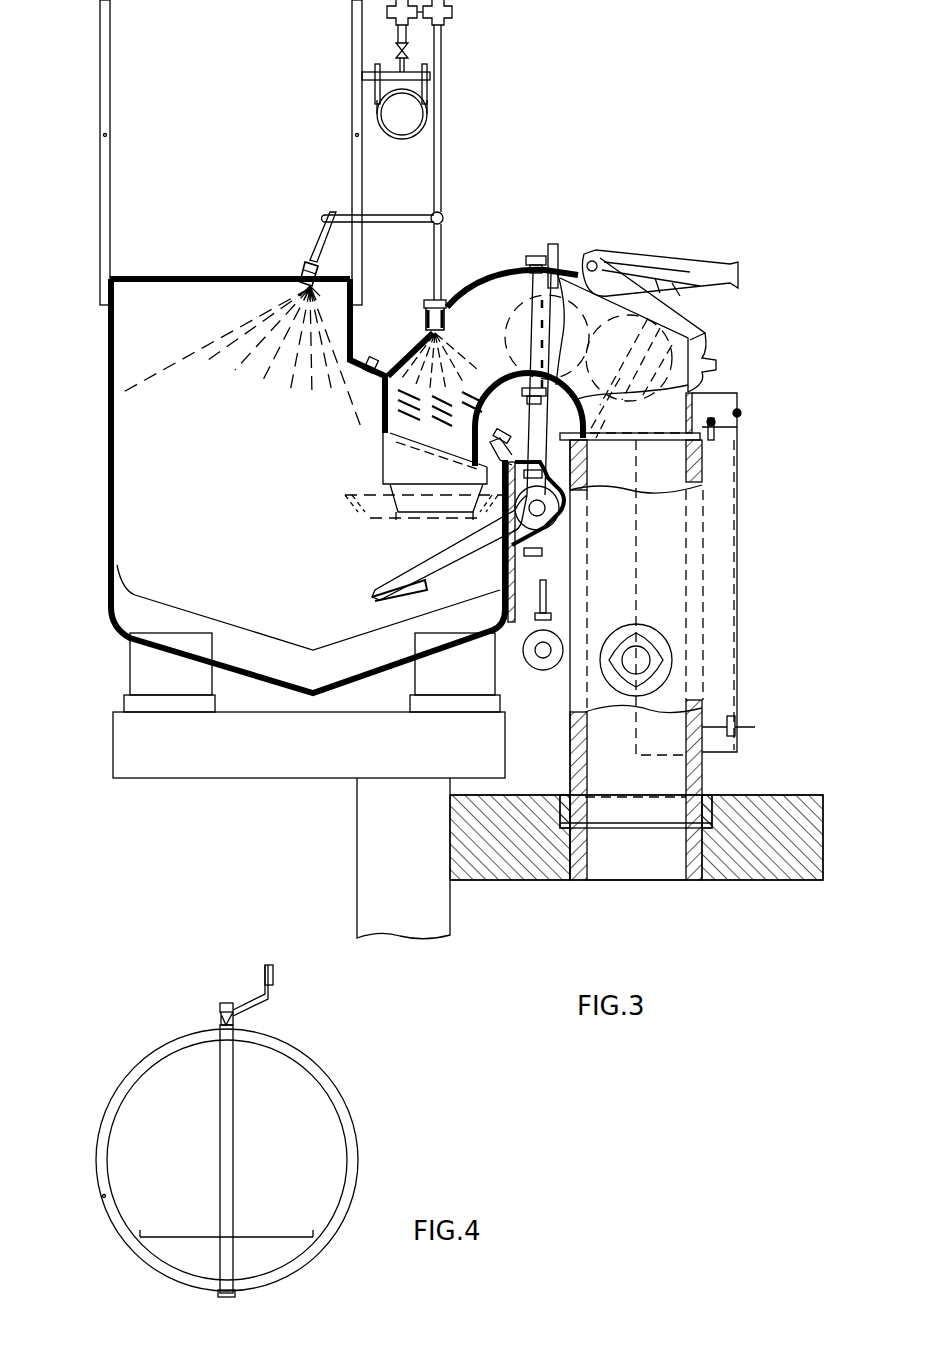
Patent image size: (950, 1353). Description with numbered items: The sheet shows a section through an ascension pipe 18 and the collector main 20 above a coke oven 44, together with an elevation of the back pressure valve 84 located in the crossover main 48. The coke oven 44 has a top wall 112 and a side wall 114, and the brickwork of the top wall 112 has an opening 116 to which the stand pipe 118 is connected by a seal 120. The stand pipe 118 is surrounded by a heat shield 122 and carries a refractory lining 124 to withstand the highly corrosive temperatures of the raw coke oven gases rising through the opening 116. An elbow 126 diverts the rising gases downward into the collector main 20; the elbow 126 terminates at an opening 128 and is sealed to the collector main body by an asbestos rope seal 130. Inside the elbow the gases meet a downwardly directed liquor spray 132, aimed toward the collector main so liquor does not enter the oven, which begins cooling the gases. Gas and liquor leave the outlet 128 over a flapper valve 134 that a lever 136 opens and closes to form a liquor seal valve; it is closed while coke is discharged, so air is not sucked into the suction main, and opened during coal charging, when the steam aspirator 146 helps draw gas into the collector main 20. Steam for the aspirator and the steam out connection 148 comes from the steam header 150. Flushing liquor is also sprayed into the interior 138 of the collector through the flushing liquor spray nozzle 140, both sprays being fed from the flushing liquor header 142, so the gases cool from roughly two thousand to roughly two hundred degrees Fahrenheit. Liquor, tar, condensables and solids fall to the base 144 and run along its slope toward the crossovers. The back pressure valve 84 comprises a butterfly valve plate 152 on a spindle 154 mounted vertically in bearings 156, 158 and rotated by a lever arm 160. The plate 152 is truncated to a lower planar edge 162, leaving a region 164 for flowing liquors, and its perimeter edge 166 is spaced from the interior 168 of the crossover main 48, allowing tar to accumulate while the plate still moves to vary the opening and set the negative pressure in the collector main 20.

In FIG. 3, the ascension pipe 18 is at (778, 538).
In FIG. 3, the collector main 20 is at (100, 455).
In FIG. 3, the coke oven 44 is at (785, 796).
In FIG. 3, the top wall 112 is at (793, 866).
In FIG. 3, the side wall 114 is at (445, 920).
In FIG. 3, the opening 116 is at (682, 870).
In FIG. 3, the stand pipe 118 is at (694, 588).
In FIG. 3, the seal 120 is at (708, 800).
In FIG. 3, the heat shield 122 is at (740, 658).
In FIG. 3, the refractory lining 124 is at (702, 460).
In FIG. 3, the elbow 126 is at (571, 244).
In FIG. 3, the opening 128 is at (392, 464).
In FIG. 3, the asbestos rope seal 130 is at (383, 423).
In FIG. 3, the liquor spray 132 is at (440, 298).
In FIG. 3, the flapper valve 134 is at (402, 587).
In FIG. 3, the lever 136 is at (590, 256).
In FIG. 3, the interior 138 is at (222, 448).
In FIG. 3, the flushing liquor spray nozzle 140 is at (312, 262).
In FIG. 3, the flushing liquor header 142 is at (408, 118).
In FIG. 3, the base 144 is at (256, 632).
In FIG. 3, the steam aspirator 146 is at (718, 365).
In FIG. 3, the steam out connection 148 is at (644, 658).
In FIG. 3, the steam header 150 is at (546, 660).
In FIG. 4, the crossover main 48 is at (343, 1098).
In FIG. 4, the back pressure valve 84 is at (378, 1168).
In FIG. 4, the butterfly valve plate 152 is at (166, 1084).
In FIG. 4, the spindle 154 is at (228, 1065).
In FIG. 4, the bearing 156 is at (232, 1296).
In FIG. 4, the bearing 158 is at (222, 1022).
In FIG. 4, the lever arm 160 is at (270, 985).
In FIG. 4, the lower planar edge 162 is at (183, 1240).
In FIG. 4, the region 164 is at (162, 1250).
In FIG. 4, the perimeter edge 166 is at (115, 1120).
In FIG. 4, the interior 168 is at (104, 1196).